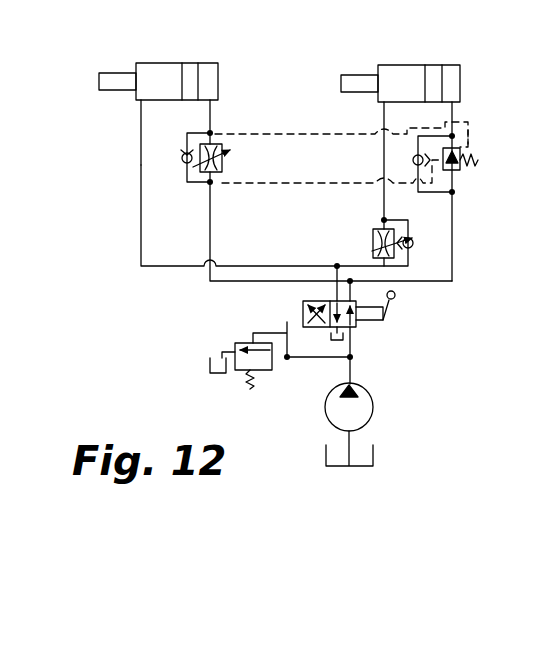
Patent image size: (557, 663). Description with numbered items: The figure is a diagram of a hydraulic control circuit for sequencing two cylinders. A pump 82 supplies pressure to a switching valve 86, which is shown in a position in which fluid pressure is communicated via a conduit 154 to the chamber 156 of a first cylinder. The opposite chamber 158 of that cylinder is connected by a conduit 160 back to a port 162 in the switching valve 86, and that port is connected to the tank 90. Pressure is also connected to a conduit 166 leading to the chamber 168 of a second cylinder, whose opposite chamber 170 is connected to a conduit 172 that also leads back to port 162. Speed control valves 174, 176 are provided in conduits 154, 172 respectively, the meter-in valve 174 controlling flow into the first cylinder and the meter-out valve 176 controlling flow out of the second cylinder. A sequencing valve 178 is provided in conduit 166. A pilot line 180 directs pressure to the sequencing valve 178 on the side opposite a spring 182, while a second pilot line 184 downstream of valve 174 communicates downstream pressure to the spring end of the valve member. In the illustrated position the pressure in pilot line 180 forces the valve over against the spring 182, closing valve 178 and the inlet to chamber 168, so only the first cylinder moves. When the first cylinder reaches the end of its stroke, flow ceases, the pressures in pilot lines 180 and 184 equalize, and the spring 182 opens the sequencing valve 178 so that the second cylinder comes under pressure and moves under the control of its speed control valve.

The chamber of first cylinder 156 is at (210, 77).
The opposite chamber of first cylinder 158 is at (160, 98).
The conduit 160 is at (141, 221).
The speed control valve 174 is at (190, 184).
The conduit 154 is at (212, 222).
The second pilot line 184 is at (270, 134).
The pilot line 180 is at (272, 183).
The conduit 172 is at (384, 157).
The opposite chamber of second cylinder 170 is at (390, 66).
The chamber of second cylinder 168 is at (457, 80).
The sequencing valve 178 is at (470, 135).
The spring 182 is at (478, 157).
The conduit 166 is at (453, 218).
The speed control valve 176 is at (428, 250).
The port 162 is at (337, 282).
The switching valve 86 is at (370, 327).
The pump 82 is at (368, 405).
The tank 90 is at (337, 341).